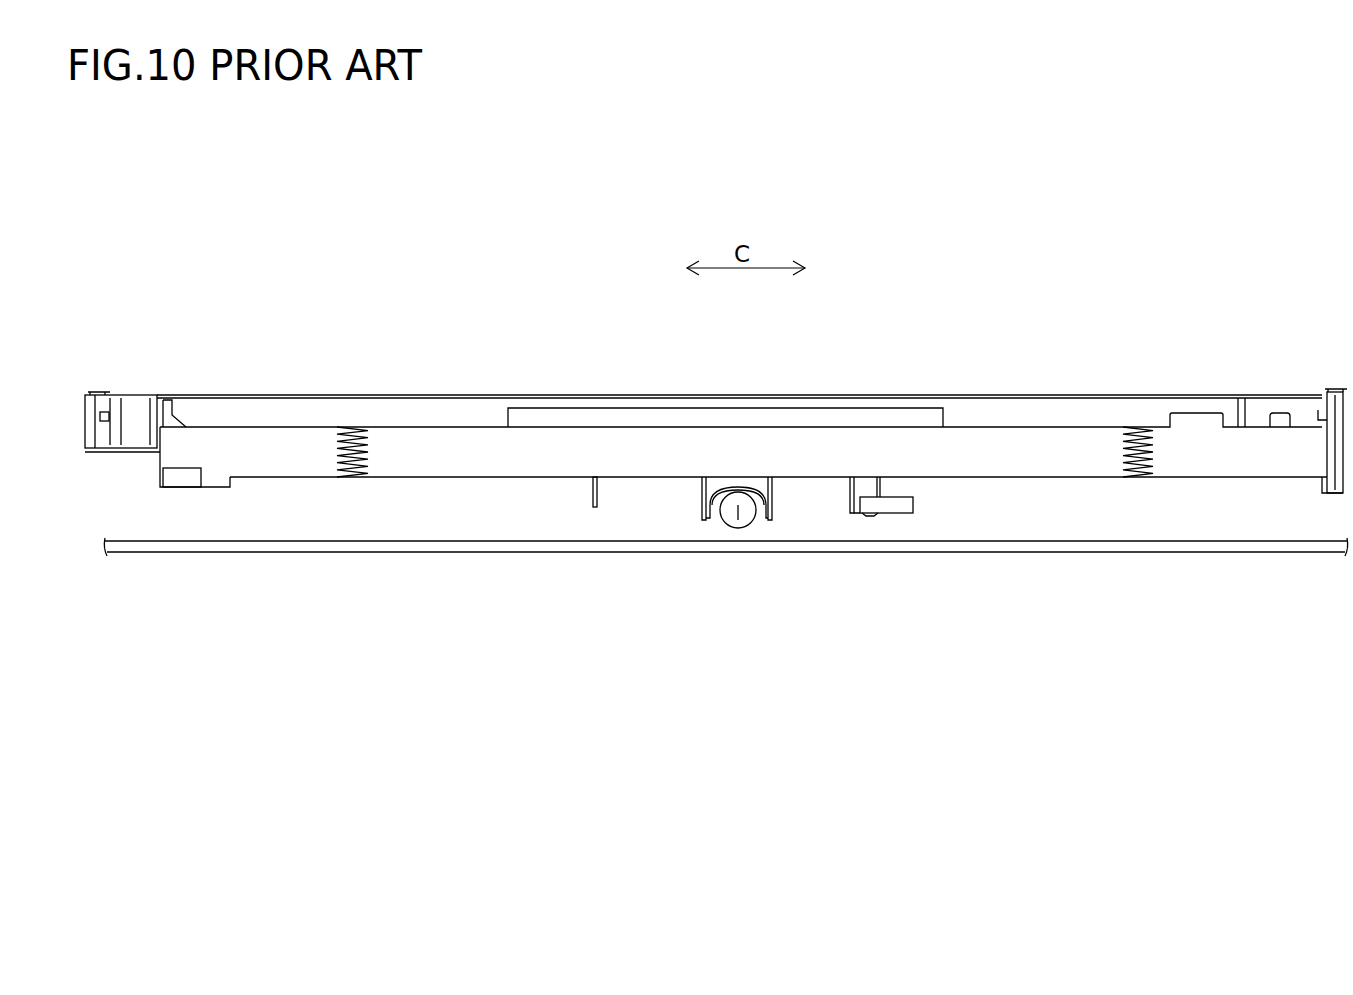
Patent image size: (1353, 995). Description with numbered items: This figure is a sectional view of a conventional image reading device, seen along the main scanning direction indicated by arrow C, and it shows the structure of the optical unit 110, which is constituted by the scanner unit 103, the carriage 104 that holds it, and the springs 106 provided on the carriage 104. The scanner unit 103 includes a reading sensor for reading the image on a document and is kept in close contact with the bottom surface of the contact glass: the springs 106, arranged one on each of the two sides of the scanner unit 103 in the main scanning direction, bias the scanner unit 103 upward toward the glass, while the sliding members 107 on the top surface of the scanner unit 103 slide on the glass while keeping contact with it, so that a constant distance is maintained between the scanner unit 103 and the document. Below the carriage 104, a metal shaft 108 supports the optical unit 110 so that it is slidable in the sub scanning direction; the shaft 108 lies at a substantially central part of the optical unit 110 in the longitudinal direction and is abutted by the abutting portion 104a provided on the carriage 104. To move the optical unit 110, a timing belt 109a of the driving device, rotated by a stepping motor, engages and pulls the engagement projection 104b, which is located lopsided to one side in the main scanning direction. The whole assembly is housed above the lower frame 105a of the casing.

The scanner unit 103 is at (985, 408).
The carriage 104 is at (1059, 445).
The abutting portion 104a is at (702, 500).
The engagement projection 104b is at (850, 505).
The lower frame 105a is at (1173, 542).
The springs 106 is at (353, 427).
The sliding members 107 is at (95, 392).
The shaft 108 is at (738, 515).
The timing belt 109a is at (878, 505).
The optical unit 110 is at (1162, 318).